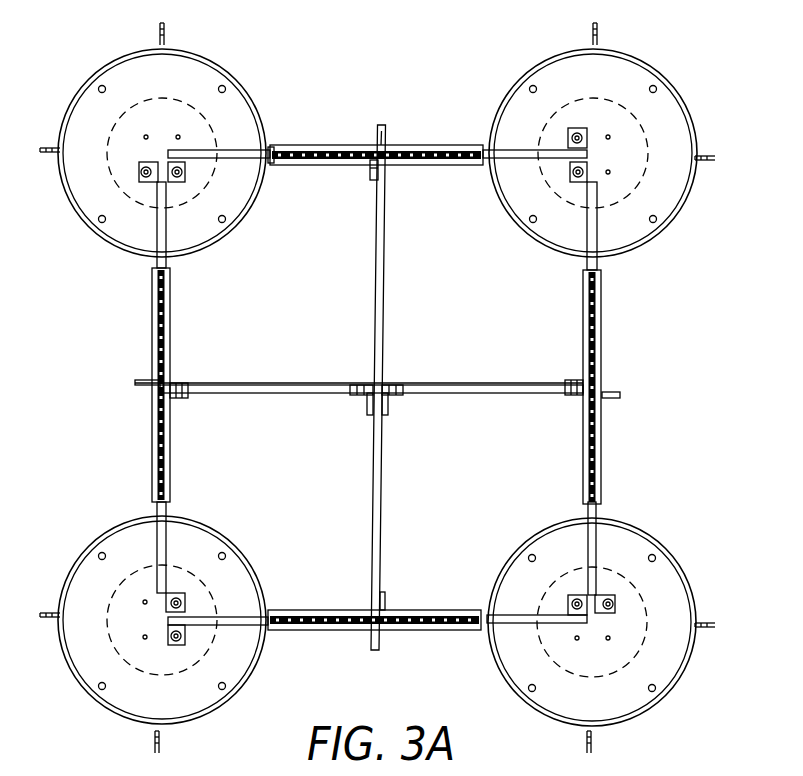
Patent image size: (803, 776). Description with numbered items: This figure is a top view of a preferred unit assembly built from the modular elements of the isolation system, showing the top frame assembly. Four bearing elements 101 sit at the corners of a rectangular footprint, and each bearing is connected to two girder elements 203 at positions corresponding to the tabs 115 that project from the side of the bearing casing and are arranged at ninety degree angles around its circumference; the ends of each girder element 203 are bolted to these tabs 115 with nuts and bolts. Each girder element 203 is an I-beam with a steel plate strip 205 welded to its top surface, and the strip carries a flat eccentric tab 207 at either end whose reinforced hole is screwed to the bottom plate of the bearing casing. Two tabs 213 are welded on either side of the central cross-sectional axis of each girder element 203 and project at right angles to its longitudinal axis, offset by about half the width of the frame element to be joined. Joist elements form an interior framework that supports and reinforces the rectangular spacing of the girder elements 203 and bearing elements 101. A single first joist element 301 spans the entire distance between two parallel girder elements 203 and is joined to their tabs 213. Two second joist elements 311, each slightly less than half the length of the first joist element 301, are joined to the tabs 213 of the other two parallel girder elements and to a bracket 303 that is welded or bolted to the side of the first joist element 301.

The bearing element 101 is at (683, 92).
The steel plate strip 205 is at (243, 150).
The girder element 203 is at (421, 144).
The eccentric tab 207 is at (184, 170).
The tab 115 is at (273, 165).
The tab 213 is at (370, 181).
The first joist element 301 is at (380, 307).
The bracket 303 is at (395, 396).
The second joist element 311 is at (253, 393).